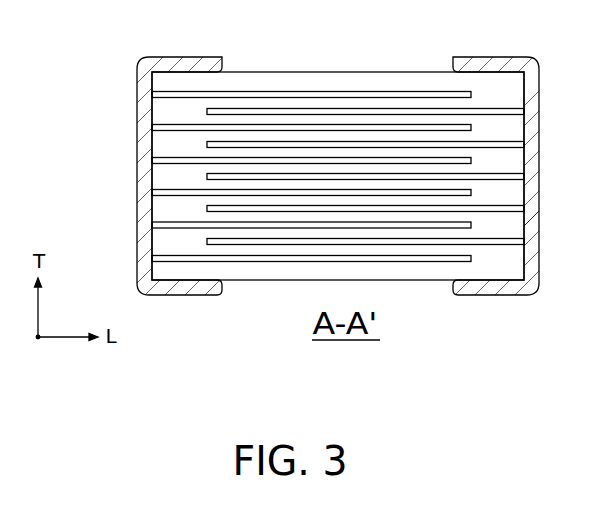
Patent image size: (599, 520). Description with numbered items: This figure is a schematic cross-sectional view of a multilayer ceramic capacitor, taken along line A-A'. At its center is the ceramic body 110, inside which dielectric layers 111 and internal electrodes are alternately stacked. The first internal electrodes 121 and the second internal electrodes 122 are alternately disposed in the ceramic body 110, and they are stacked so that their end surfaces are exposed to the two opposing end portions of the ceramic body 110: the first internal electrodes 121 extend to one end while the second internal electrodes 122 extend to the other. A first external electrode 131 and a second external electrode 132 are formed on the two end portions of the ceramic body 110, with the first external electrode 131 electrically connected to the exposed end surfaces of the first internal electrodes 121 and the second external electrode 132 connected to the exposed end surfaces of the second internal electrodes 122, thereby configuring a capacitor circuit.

The ceramic body 110 is at (340, 70).
The dielectric layer 111 is at (175, 114).
The first internal electrode 121 is at (173, 94).
The second internal electrode 122 is at (217, 110).
The first external electrode 131 is at (178, 58).
The second external electrode 132 is at (497, 58).